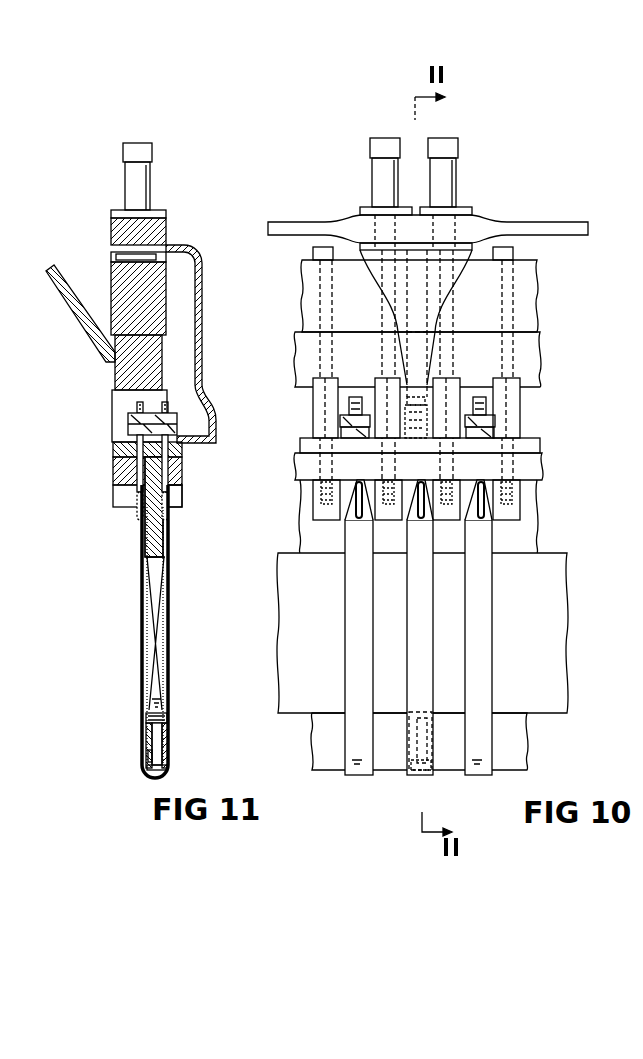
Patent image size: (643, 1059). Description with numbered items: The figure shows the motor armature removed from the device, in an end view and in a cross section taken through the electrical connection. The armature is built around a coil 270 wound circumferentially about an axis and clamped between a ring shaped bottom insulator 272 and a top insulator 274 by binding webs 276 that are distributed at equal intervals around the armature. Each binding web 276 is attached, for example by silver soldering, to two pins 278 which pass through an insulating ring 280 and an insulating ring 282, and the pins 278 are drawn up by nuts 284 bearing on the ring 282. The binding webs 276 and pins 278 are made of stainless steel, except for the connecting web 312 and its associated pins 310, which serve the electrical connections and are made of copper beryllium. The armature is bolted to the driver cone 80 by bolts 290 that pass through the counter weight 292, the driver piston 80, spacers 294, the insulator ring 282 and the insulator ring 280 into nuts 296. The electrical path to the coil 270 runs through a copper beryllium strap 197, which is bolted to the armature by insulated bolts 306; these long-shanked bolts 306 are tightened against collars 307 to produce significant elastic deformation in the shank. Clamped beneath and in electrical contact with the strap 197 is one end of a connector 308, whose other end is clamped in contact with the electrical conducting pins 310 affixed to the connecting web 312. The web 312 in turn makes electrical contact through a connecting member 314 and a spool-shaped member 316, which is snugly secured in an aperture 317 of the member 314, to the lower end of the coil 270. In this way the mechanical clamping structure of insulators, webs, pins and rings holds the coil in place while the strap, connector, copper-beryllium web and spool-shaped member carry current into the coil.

In FIG. 11, the driver cone 80 is at (93, 342).
In FIG. 10, the driver cone 80 is at (540, 340).
In FIG. 11, the strap 197 is at (163, 231).
In FIG. 10, the strap 197 is at (333, 222).
In FIG. 11, the coil 270 is at (142, 617).
In FIG. 10, the coil 270 is at (290, 611).
In FIG. 11, the bottom insulator 272 is at (146, 737).
In FIG. 10, the bottom insulator 272 is at (522, 740).
In FIG. 11, the top insulator 274 is at (143, 547).
In FIG. 10, the top insulator 274 is at (531, 531).
In FIG. 10, the binding webs 276 is at (352, 640).
In FIG. 10, the pins 278 is at (356, 520).
In FIG. 11, the insulating ring 280 is at (113, 471).
In FIG. 10, the insulating ring 280 is at (543, 470).
In FIG. 11, the insulating ring 282 is at (113, 450).
In FIG. 10, the insulating ring 282 is at (541, 447).
In FIG. 11, the nuts 284 is at (128, 432).
In FIG. 10, the nuts 284 is at (492, 433).
In FIG. 10, the bolts 290 is at (514, 253).
In FIG. 11, the counter weight 292 is at (111, 272).
In FIG. 10, the counter weight 292 is at (537, 292).
In FIG. 11, the spacers 294 is at (112, 400).
In FIG. 10, the spacers 294 is at (318, 400).
In FIG. 11, the nuts 296 is at (181, 507).
In FIG. 10, the nuts 296 is at (316, 490).
In FIG. 11, the insulated bolts 306 is at (153, 147).
In FIG. 10, the insulated bolts 306 is at (370, 152).
In FIG. 11, the collars 307 is at (151, 178).
In FIG. 10, the collars 307 is at (458, 182).
In FIG. 11, the connector 308 is at (203, 292).
In FIG. 10, the connector 308 is at (397, 293).
In FIG. 11, the electrical conducting pins 310 is at (140, 488).
In FIG. 10, the electrical conducting pins 310 is at (421, 520).
In FIG. 11, the connecting web 312 is at (141, 665).
In FIG. 10, the connecting web 312 is at (423, 655).
In FIG. 11, the connecting member 314 is at (170, 767).
In FIG. 10, the connecting member 314 is at (431, 765).
In FIG. 11, the spool-shaped member 316 is at (162, 742).
In FIG. 10, the spool-shaped member 316 is at (429, 746).
In FIG. 11, the aperture 317 is at (146, 752).